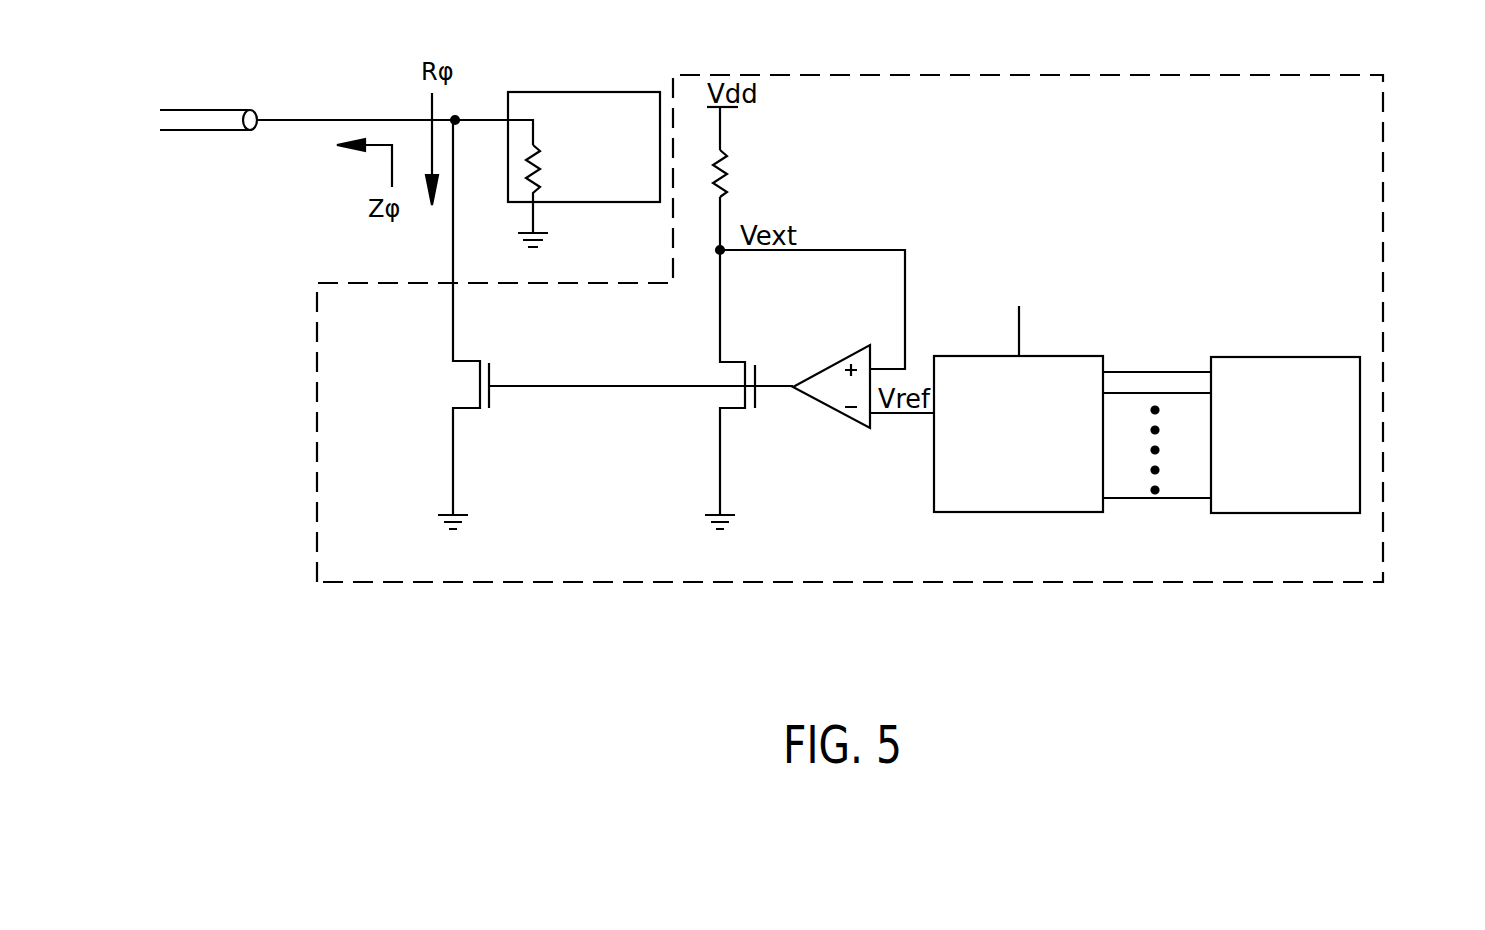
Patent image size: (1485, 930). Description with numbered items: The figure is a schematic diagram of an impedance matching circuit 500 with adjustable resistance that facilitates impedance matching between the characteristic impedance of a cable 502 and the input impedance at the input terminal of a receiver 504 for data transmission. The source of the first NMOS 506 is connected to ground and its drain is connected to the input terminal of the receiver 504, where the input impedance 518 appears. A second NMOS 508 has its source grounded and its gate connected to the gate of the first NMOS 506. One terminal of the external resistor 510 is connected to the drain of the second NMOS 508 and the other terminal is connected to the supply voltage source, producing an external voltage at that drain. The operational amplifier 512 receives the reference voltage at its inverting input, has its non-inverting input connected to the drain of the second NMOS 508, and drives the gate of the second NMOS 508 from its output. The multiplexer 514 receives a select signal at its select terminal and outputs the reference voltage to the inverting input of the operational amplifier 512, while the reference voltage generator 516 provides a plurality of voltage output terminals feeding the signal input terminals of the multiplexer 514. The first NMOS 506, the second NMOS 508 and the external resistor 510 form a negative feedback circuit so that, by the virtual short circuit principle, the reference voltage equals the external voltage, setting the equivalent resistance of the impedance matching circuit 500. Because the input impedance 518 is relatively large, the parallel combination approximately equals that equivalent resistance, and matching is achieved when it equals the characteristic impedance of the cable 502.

The impedance matching circuit 500 is at (1383, 517).
The cable 502 is at (203, 131).
The receiver 504 is at (632, 203).
The NMOS 506 is at (493, 410).
The NMOS 508 is at (760, 405).
The resistor Rext 510 is at (722, 153).
The operational amplifier 512 is at (848, 428).
The multiplexer 514 is at (953, 356).
The reference voltage generator 516 is at (1220, 357).
The input impedance Zin 518 is at (523, 150).